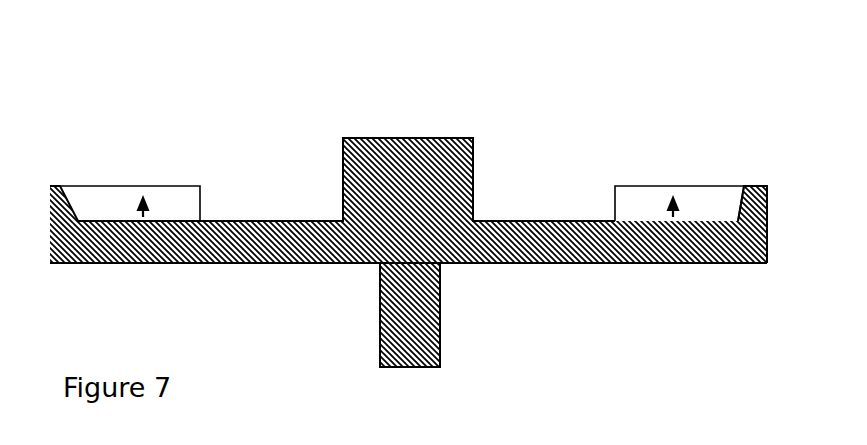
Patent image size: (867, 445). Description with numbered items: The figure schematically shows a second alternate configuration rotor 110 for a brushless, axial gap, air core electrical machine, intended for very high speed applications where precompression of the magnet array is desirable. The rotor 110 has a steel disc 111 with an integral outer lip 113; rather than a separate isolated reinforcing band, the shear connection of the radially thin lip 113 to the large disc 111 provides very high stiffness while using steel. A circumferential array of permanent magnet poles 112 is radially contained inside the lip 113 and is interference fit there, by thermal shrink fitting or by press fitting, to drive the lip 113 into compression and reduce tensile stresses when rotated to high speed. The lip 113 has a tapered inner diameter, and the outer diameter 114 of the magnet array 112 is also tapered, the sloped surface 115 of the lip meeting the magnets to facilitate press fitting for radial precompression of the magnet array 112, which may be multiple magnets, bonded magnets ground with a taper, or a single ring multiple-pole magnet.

The second alternate configuration rotor 110 is at (98, 58).
The steel disc 111 is at (618, 270).
The circumferential array of permanent magnet poles 112 is at (633, 184).
The outer lip 113 is at (767, 172).
The outer diameter of the magnet array 114 is at (752, 211).
The sloped wall surface 115 is at (736, 203).